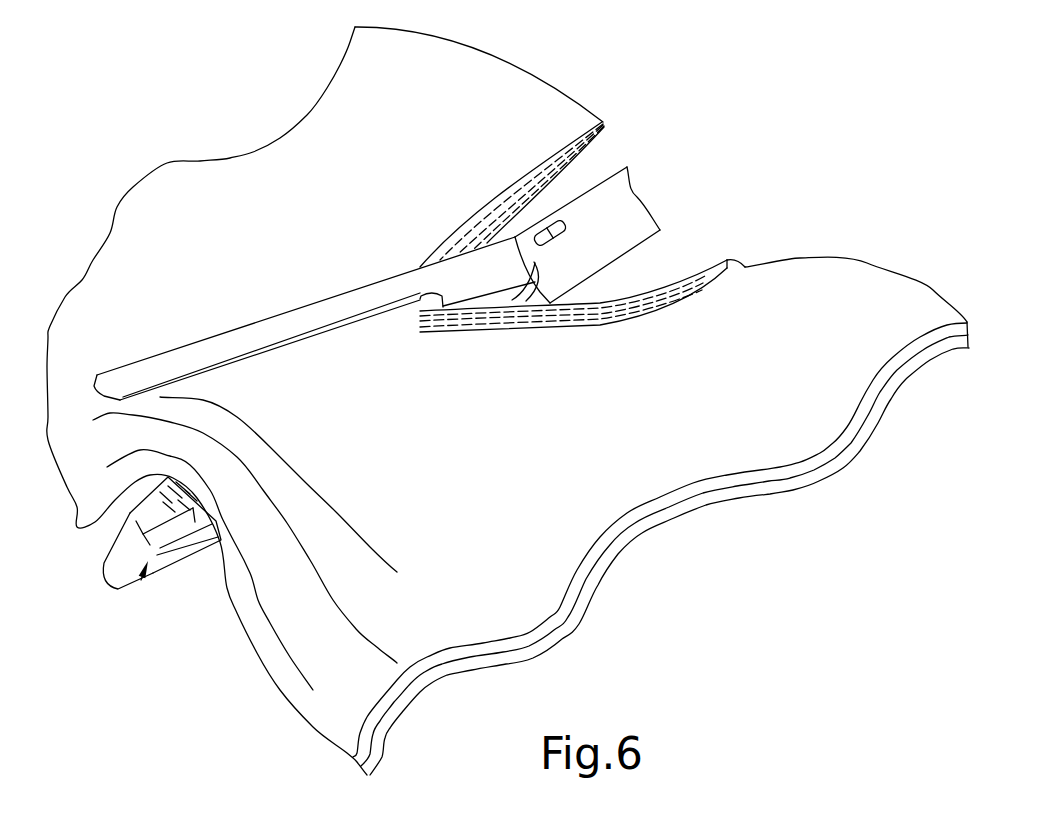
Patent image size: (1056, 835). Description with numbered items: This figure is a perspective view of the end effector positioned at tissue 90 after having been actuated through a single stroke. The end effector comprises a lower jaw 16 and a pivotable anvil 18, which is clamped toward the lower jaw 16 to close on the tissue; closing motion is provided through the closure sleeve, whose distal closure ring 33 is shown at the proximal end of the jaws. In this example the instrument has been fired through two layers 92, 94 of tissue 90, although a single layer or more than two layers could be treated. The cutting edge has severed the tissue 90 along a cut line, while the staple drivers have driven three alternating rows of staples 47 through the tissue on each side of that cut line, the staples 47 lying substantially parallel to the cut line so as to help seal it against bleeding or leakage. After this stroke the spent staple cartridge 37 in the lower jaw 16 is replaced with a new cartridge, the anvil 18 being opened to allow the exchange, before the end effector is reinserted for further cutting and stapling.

The tissue 90 is at (168, 114).
The first tissue layer 92 is at (970, 320).
The second tissue layer 94 is at (968, 346).
The anvil 18 is at (317, 322).
The distal closure ring 33 is at (597, 260).
The staples 47 is at (552, 150).
The lower jaw 16 is at (183, 556).
The staple cartridge 37 is at (141, 580).